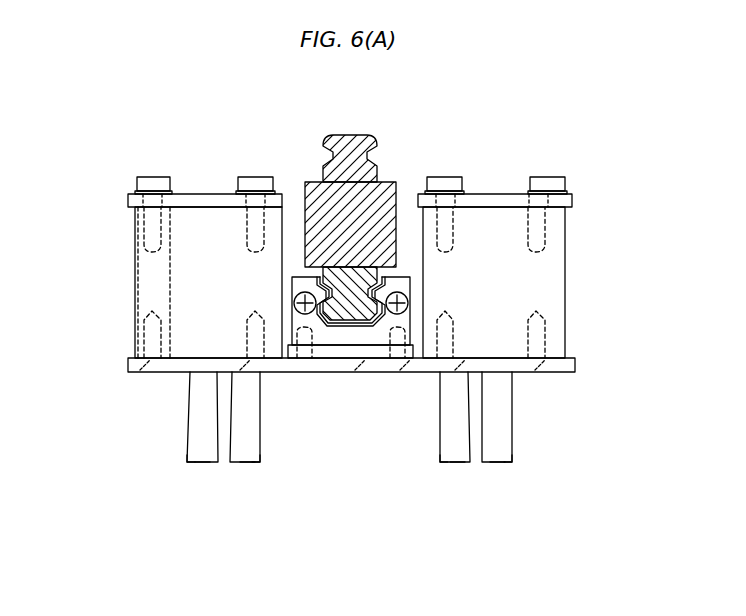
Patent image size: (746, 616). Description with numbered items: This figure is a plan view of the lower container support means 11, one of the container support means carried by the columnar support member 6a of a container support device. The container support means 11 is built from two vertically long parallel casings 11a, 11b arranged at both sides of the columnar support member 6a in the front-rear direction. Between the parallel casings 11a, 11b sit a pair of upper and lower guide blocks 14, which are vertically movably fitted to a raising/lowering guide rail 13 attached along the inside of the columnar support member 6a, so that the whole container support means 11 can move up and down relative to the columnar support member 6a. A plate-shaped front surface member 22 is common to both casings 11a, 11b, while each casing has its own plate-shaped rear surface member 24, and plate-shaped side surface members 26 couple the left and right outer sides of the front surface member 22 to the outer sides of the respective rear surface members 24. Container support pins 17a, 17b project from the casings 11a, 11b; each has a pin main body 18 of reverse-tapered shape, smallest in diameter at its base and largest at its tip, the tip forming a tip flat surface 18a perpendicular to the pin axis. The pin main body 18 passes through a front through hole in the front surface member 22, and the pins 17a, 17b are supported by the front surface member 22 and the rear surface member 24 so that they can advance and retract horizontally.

The columnar support member 6a is at (387, 205).
The lower container support means 11 is at (572, 260).
The parallel casing 11a is at (148, 375).
The parallel casing 11b is at (545, 374).
The raising/lowering guide rail 13 is at (357, 305).
The guide block 14 is at (337, 333).
The pin main body 18 is at (195, 428).
The container support pin 17a is at (257, 463).
The container support pin 17b is at (191, 463).
The tip flat surface 18a is at (240, 462).
The front surface member 22 is at (352, 372).
The rear surface member 24 is at (200, 203).
The side surface member 26 is at (152, 278).